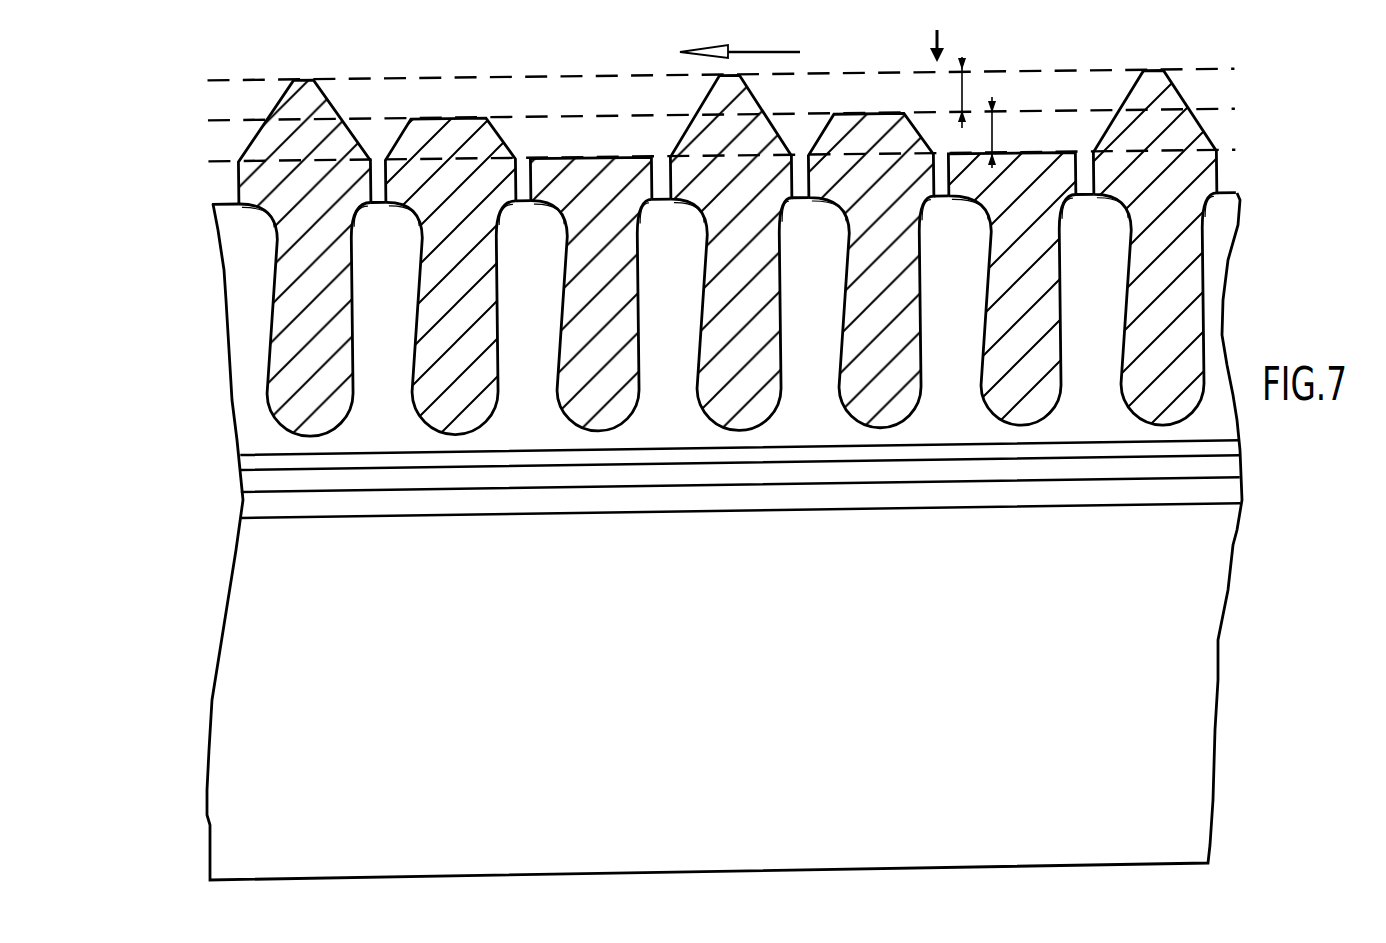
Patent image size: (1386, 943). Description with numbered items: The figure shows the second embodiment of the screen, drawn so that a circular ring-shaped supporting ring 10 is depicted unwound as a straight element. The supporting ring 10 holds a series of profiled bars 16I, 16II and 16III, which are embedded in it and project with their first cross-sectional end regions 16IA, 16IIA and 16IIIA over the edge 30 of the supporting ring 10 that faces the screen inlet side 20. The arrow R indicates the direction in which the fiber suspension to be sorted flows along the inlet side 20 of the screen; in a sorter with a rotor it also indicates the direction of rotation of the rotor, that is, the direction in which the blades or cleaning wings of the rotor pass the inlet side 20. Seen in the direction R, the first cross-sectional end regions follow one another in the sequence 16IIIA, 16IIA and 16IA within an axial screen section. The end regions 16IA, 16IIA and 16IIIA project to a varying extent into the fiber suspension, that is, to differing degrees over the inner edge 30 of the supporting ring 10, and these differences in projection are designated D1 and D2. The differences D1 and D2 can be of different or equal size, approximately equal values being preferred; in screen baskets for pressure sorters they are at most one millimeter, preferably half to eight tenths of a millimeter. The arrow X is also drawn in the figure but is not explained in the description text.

The supporting ring 10 is at (1232, 647).
The screen inlet side 20 is at (1071, 59).
The edge of the supporting ring 30 is at (227, 203).
The first cross-sectional end region 16IA is at (235, 139).
The first cross-sectional end region 16IIA is at (392, 123).
The first cross-sectional end region 16IIIA is at (525, 137).
The profiled bar 16I is at (255, 376).
The profiled bar 16II is at (395, 376).
The profiled bar 16III is at (543, 372).
The difference in projection D1 is at (962, 90).
The difference in projection D2 is at (992, 134).
The feed direction X is at (923, 47).
The arrow indicating flow or rotation direction R is at (740, 42).